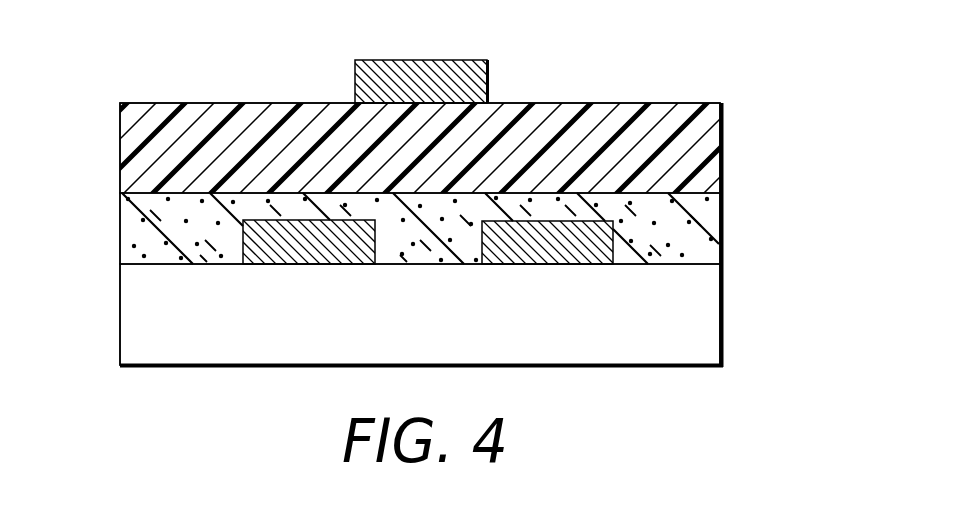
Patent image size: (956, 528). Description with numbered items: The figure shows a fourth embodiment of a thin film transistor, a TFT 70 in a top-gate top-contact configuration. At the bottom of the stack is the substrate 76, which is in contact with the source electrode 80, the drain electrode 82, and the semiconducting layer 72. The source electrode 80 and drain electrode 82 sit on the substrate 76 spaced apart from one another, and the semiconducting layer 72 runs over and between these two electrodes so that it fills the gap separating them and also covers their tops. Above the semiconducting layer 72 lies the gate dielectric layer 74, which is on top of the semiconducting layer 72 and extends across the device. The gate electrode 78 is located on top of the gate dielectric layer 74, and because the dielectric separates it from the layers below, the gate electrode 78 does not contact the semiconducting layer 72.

The TFT 70 is at (150, 60).
The semiconducting layer 72 is at (720, 238).
The gate dielectric layer 74 is at (110, 105).
The substrate 76 is at (713, 315).
The gate electrode 78 is at (438, 94).
The source electrode 80 is at (326, 256).
The drain electrode 82 is at (566, 256).